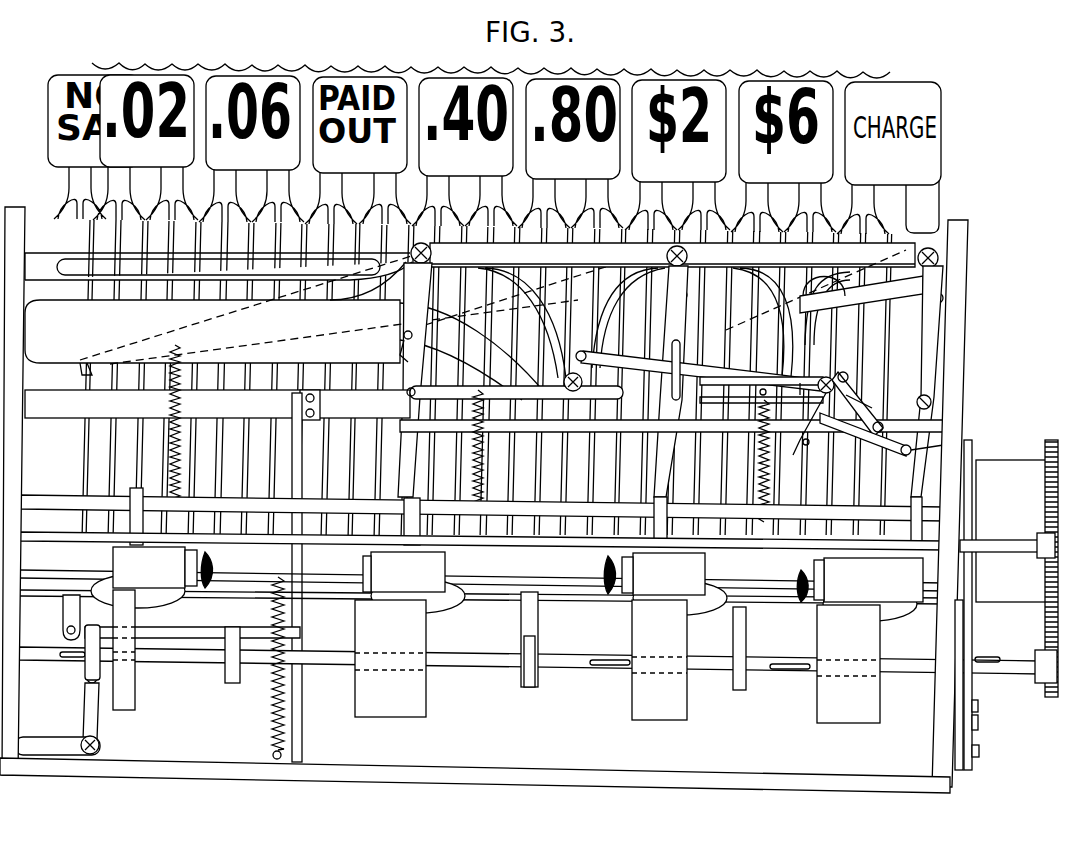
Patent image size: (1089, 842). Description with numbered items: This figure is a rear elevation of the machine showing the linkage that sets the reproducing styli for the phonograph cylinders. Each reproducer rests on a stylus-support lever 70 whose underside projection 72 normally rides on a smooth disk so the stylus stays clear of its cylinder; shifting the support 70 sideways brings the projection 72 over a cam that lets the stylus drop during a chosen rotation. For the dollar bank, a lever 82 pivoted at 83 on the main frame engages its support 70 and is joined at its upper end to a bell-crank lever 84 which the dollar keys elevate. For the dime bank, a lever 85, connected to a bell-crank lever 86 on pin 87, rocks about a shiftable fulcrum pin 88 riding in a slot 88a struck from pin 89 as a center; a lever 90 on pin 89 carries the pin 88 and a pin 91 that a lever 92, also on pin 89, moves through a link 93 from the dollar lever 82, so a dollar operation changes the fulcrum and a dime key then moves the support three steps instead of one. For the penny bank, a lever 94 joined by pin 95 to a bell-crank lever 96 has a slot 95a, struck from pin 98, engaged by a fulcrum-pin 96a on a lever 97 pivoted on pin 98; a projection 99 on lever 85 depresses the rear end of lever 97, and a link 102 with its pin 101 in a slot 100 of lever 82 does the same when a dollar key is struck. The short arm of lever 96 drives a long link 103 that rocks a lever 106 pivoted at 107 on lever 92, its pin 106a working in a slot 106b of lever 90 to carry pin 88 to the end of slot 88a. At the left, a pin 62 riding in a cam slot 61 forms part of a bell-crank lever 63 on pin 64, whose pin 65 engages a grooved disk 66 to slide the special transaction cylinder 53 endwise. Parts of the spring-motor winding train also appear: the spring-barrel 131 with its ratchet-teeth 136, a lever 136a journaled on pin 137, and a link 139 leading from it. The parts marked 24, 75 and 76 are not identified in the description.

The shaft 24 is at (180, 660).
The special transaction cylinder 53 is at (136, 697).
The cam slot 61 is at (860, 640).
The pin 62 is at (10, 742).
The bell-crank lever 63 is at (68, 742).
The pin 64 is at (100, 745).
The pin 65 is at (86, 685).
The disk 66 is at (88, 676).
The lever 70 is at (404, 500).
The projection 72 is at (1040, 546).
The rack 75 is at (1058, 498).
The pinion 76 is at (1057, 666).
The lever 82 is at (916, 465).
The pivot 83 is at (932, 401).
The bell-crank lever 84 is at (945, 281).
The lever 85 is at (930, 250).
The bell-crank lever 86 is at (530, 300).
The pin 87 is at (665, 257).
The fulcrum pin 88 is at (761, 406).
The slot 88a is at (665, 372).
The pin 89 is at (830, 378).
The lever 90 is at (744, 380).
The pin 91 is at (764, 388).
The lever 92 is at (804, 380).
The link 93 is at (858, 392).
The lever 94 is at (405, 420).
The pin 95 is at (430, 288).
The slot 95a is at (404, 342).
The bell-crank lever 96 is at (334, 282).
The fulcrum pin 96a is at (416, 398).
The lever 97 is at (505, 400).
The pin 98 is at (570, 393).
The projection 99 is at (655, 368).
The slot 100 is at (915, 447).
The pin 101 is at (890, 455).
The link 102 is at (819, 425).
The long link 103 is at (840, 470).
The lever 106 is at (779, 461).
The pin 106a is at (879, 399).
The slot 106b is at (796, 450).
The pivot 107 is at (856, 372).
The spring-barrel 131 is at (1010, 462).
The ratchet-teeth 136 is at (976, 446).
The lever 136a is at (980, 720).
The pin 137 is at (981, 751).
The link 139 is at (980, 702).